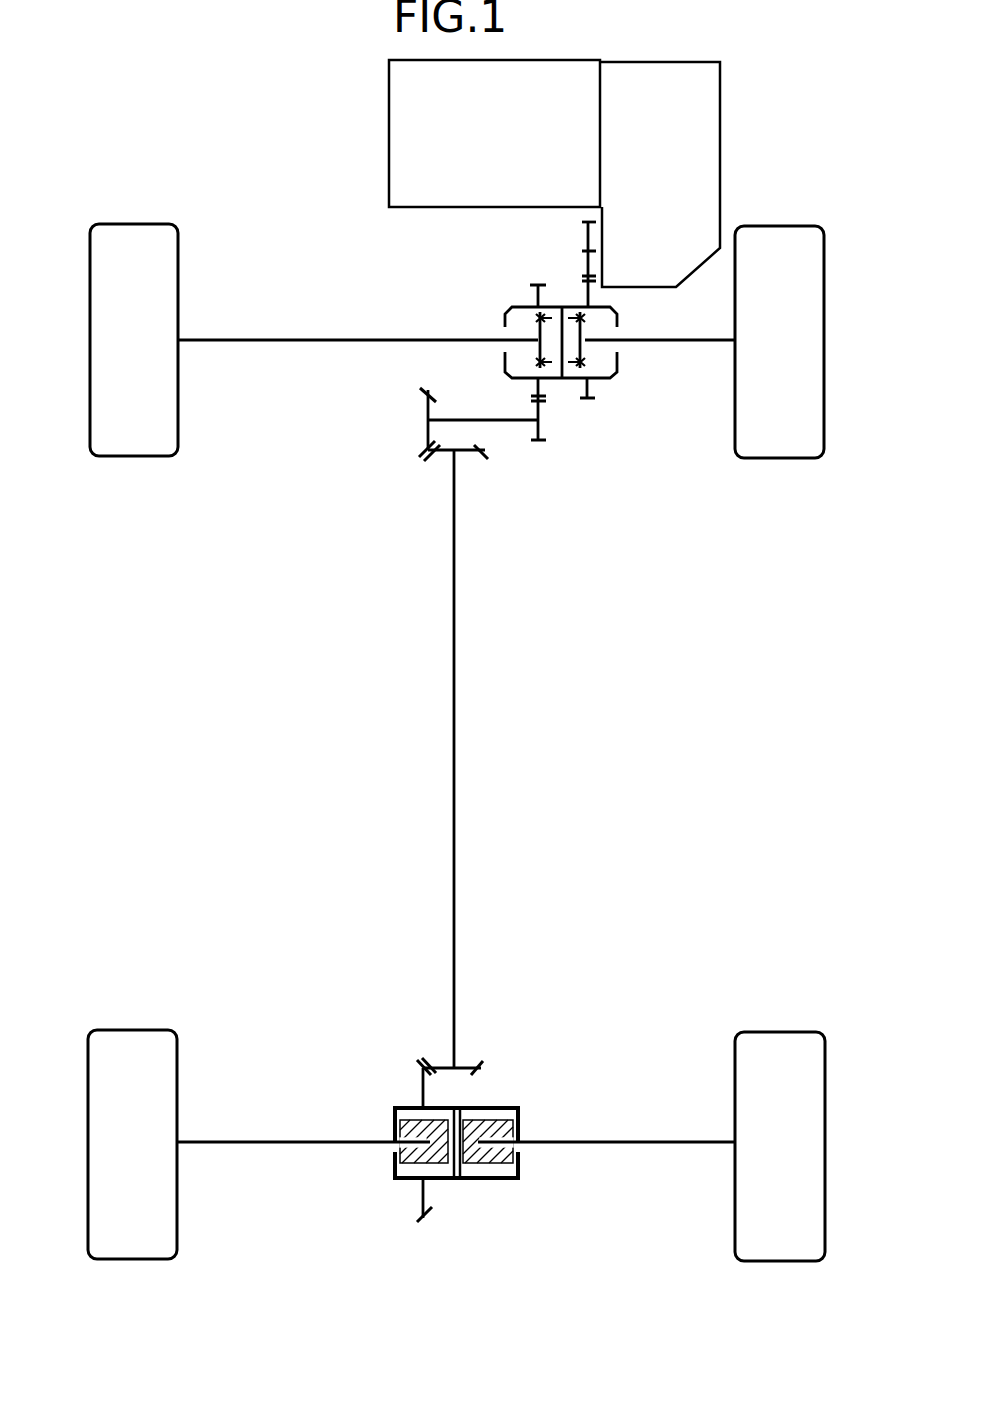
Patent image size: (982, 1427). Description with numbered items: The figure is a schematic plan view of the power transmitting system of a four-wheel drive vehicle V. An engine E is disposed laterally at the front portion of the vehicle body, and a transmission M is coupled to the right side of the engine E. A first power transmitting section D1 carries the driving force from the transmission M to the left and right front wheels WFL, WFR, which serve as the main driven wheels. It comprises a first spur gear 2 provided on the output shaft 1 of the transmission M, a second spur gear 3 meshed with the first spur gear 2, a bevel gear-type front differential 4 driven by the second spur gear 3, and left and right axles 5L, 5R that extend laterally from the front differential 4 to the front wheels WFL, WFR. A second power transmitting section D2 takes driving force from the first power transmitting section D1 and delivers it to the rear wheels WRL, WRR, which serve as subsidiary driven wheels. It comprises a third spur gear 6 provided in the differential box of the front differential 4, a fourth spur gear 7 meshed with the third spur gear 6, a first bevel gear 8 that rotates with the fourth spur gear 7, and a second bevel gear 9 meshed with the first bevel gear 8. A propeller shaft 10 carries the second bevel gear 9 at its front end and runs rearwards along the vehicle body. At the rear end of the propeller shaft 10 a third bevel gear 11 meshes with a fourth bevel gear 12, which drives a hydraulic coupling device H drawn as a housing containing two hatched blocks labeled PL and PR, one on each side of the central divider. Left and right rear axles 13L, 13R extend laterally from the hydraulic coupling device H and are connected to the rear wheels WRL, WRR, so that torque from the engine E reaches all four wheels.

The engine E is at (504, 151).
The transmission M is at (668, 171).
The four-wheel drive vehicle V is at (314, 205).
The left front wheel WFL is at (146, 232).
The right front wheel WFR is at (766, 236).
The left rear wheel WRL is at (144, 1040).
The right rear wheel WRR is at (764, 1044).
The output shaft 1 is at (590, 250).
The first spur gear 2 is at (585, 223).
The second spur gear 3 is at (590, 400).
The front differential 4 is at (618, 318).
The first power transmitting section D1 is at (569, 300).
The left axle 5L is at (318, 338).
The right axle 5R is at (690, 338).
The third spur gear 6 is at (542, 392).
The fourth spur gear 7 is at (540, 442).
The first bevel gear 8 is at (432, 394).
The second bevel gear 9 is at (485, 456).
The propeller shaft 10 is at (457, 718).
The third bevel gear 11 is at (480, 1075).
The fourth bevel gear 12 is at (416, 1072).
The second power transmitting section D2 is at (451, 1116).
The hydraulic coupling device H is at (462, 1116).
The left hydraulic pump PL is at (390, 1181).
The right hydraulic pump PR is at (526, 1172).
The left rear axle 13L is at (230, 1140).
The right rear axle 13R is at (600, 1140).